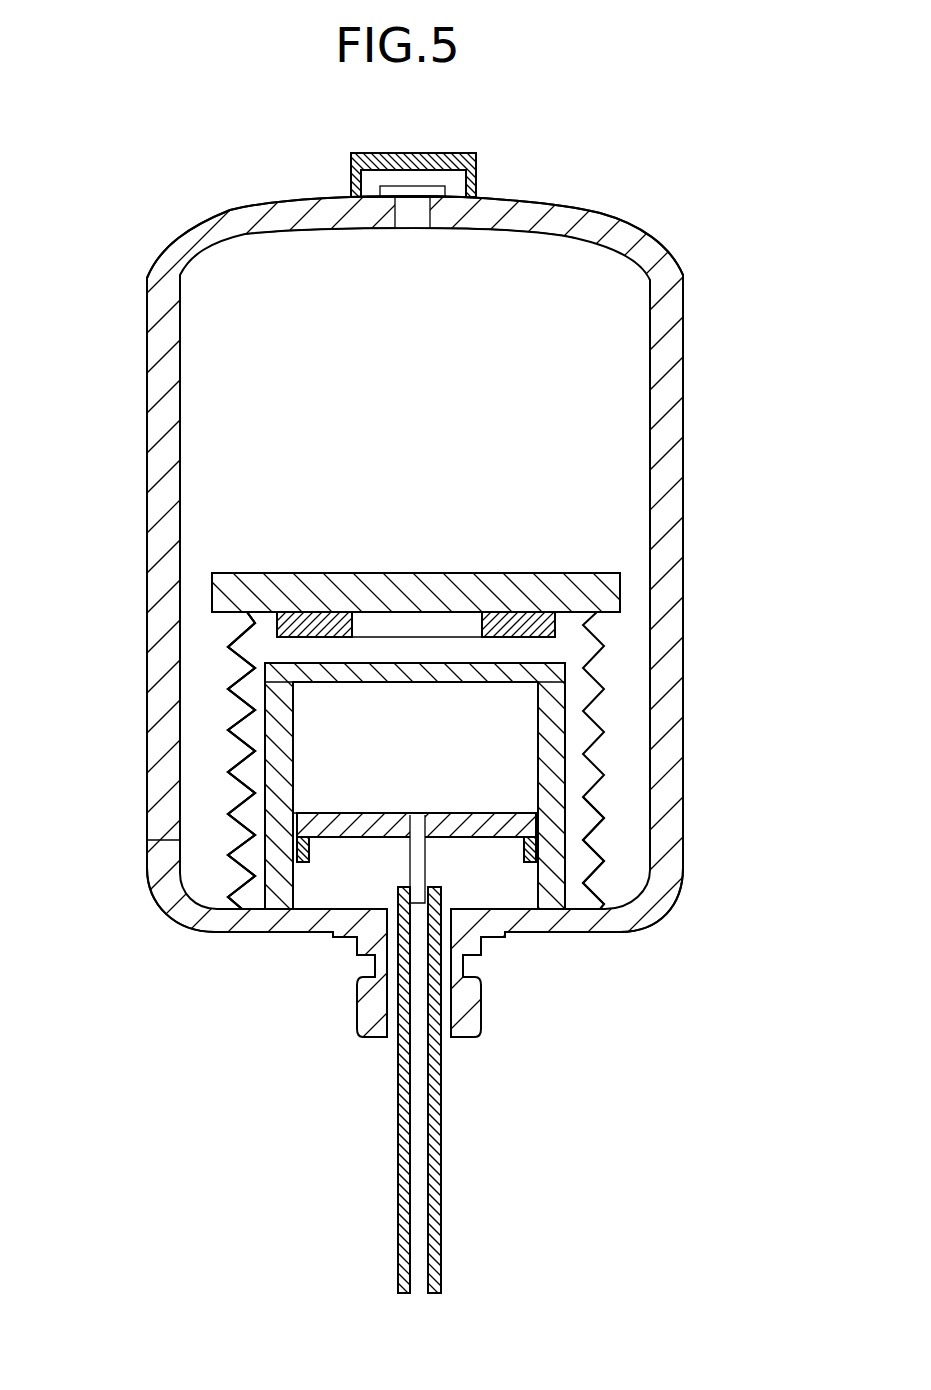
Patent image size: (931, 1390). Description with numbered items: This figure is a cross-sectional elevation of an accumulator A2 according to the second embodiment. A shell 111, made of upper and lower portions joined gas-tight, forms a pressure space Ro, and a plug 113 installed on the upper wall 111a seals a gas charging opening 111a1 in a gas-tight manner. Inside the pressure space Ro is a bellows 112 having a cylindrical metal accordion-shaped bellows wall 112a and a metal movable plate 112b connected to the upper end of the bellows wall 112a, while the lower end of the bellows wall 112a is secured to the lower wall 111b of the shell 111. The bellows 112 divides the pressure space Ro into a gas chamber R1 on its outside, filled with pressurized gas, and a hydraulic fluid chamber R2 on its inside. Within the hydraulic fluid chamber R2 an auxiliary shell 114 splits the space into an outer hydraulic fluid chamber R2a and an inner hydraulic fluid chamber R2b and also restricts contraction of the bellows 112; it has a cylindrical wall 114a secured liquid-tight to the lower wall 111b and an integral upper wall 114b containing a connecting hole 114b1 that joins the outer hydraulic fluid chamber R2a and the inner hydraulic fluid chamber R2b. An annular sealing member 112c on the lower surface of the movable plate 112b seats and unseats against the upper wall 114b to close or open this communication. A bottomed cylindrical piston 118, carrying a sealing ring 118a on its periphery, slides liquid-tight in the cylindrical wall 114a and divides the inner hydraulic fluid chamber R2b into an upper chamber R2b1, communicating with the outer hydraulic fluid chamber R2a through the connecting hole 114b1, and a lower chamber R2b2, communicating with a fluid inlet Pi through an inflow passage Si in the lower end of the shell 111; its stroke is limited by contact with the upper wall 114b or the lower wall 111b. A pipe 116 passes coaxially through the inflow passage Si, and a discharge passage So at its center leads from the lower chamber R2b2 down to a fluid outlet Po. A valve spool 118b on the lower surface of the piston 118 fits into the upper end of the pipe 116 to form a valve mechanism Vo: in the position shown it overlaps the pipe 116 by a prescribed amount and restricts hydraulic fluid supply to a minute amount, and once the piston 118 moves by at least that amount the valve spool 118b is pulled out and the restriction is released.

The accumulator A2 is at (656, 200).
The shell 111 is at (465, 604).
The upper wall 111a is at (292, 216).
The lower wall 111b is at (568, 922).
The gas charging opening 111a1 is at (423, 212).
The plug 113 is at (415, 188).
The bellows 112 is at (475, 709).
The bellows wall 112a is at (596, 760).
The movable plate 112b is at (402, 580).
The annular sealing member 112c is at (548, 615).
The auxiliary shell 114 is at (404, 731).
The cylindrical wall 114a is at (272, 878).
The upper wall 114b is at (333, 665).
The connecting hole 114b1 is at (422, 666).
The piston 118 is at (522, 845).
The sealing ring 118a is at (540, 852).
The valve spool 118b is at (434, 858).
The pipe 116 is at (419, 1109).
The gas chamber R1 is at (228, 452).
The pressure space Ro is at (608, 470).
The hydraulic fluid chamber R2 is at (242, 648).
The outer hydraulic fluid chamber R2a is at (582, 822).
The inner hydraulic fluid chamber R2b is at (502, 797).
The upper chamber R2b1 is at (512, 705).
The lower chamber R2b2 is at (474, 880).
The valve mechanism Vo is at (394, 871).
The inflow passage Si is at (372, 966).
The discharge passage So is at (436, 1053).
The fluid inlet Pi is at (394, 1043).
The fluid outlet Po is at (422, 1290).